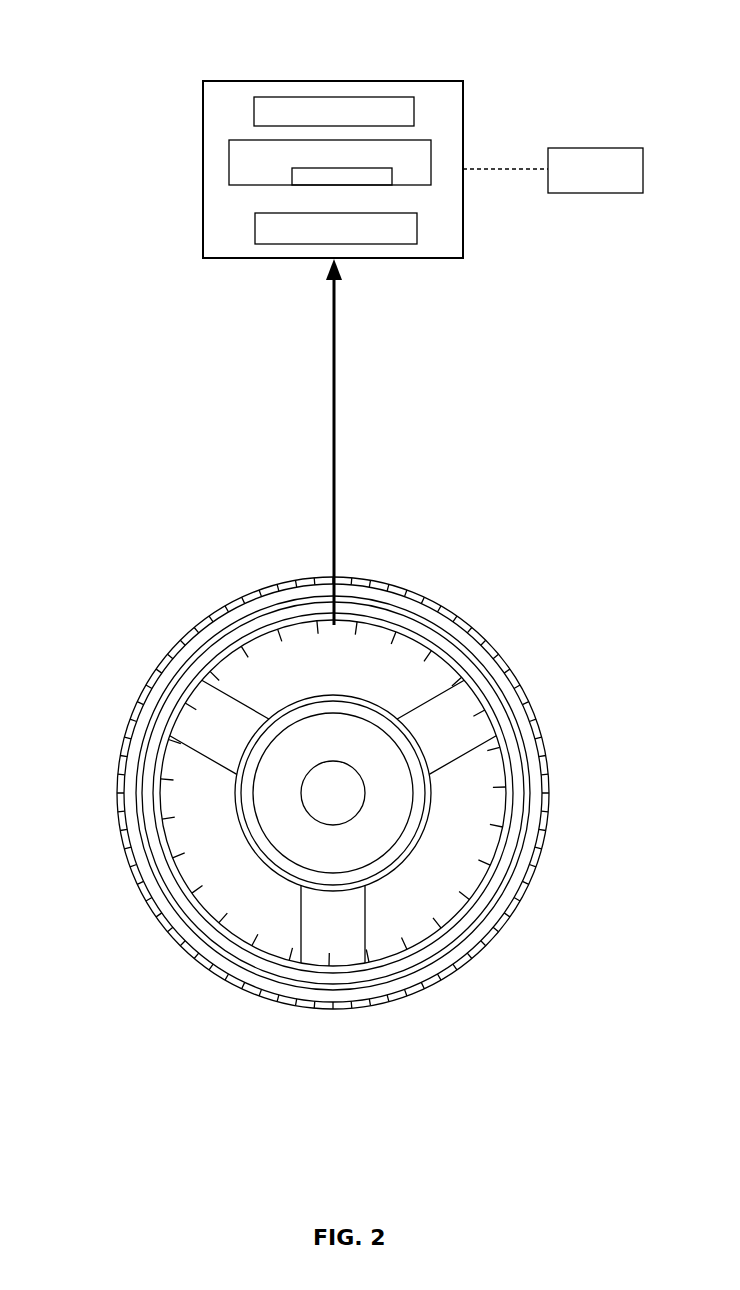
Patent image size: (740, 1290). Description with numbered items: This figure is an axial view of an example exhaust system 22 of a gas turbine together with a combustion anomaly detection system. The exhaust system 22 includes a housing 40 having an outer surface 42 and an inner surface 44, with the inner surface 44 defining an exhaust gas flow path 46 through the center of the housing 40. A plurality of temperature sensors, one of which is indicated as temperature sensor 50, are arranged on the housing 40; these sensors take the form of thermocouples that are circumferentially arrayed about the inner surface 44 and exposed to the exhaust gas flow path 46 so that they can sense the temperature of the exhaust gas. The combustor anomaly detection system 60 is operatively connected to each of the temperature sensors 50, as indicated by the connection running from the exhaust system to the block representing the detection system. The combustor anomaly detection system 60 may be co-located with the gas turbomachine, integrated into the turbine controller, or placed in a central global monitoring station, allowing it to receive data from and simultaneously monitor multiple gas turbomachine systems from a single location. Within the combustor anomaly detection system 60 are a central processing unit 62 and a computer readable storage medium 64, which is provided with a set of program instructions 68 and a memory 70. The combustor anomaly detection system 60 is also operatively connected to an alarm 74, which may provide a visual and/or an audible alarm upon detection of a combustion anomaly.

The exhaust system 22 is at (183, 577).
The housing 40 is at (108, 799).
The outer surface 42 is at (432, 596).
The inner surface 44 is at (512, 912).
The exhaust gas flow path 46 is at (410, 893).
The temperature sensor 50 is at (424, 659).
The combustor anomaly detection system 60 is at (178, 140).
The central processing unit 62 is at (335, 97).
The computer readable storage medium 64 is at (244, 140).
The set of program instructions 68 is at (393, 177).
The memory 70 is at (374, 246).
The alarm 74 is at (597, 148).